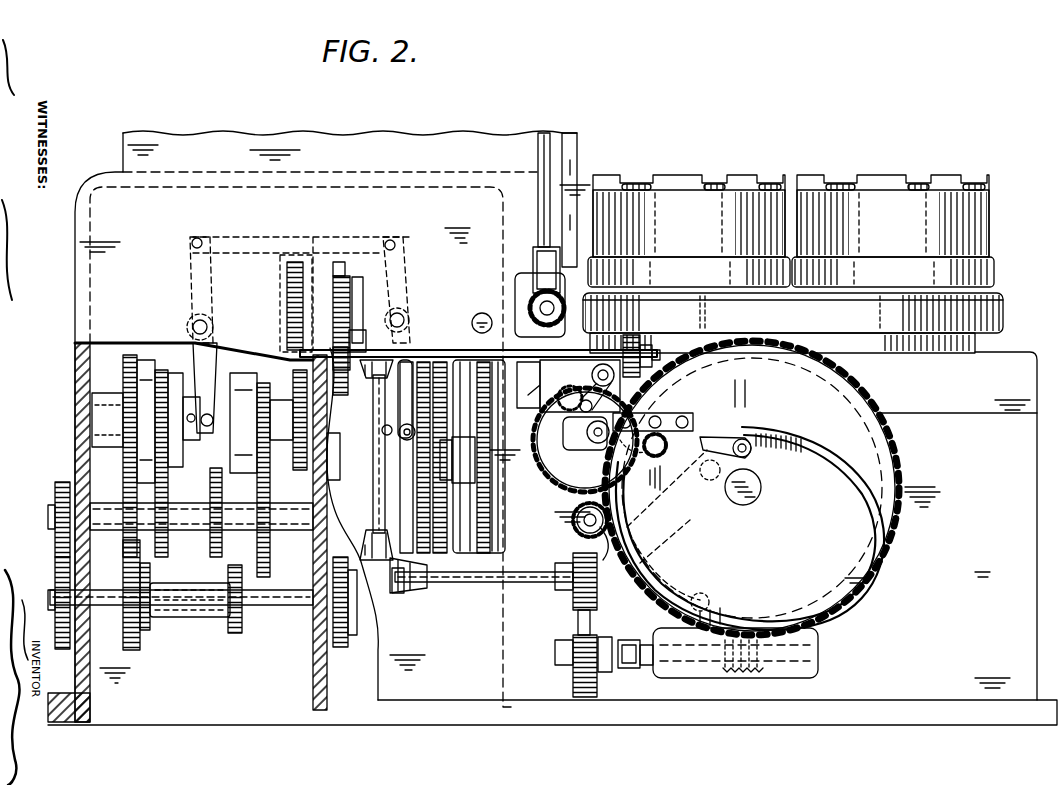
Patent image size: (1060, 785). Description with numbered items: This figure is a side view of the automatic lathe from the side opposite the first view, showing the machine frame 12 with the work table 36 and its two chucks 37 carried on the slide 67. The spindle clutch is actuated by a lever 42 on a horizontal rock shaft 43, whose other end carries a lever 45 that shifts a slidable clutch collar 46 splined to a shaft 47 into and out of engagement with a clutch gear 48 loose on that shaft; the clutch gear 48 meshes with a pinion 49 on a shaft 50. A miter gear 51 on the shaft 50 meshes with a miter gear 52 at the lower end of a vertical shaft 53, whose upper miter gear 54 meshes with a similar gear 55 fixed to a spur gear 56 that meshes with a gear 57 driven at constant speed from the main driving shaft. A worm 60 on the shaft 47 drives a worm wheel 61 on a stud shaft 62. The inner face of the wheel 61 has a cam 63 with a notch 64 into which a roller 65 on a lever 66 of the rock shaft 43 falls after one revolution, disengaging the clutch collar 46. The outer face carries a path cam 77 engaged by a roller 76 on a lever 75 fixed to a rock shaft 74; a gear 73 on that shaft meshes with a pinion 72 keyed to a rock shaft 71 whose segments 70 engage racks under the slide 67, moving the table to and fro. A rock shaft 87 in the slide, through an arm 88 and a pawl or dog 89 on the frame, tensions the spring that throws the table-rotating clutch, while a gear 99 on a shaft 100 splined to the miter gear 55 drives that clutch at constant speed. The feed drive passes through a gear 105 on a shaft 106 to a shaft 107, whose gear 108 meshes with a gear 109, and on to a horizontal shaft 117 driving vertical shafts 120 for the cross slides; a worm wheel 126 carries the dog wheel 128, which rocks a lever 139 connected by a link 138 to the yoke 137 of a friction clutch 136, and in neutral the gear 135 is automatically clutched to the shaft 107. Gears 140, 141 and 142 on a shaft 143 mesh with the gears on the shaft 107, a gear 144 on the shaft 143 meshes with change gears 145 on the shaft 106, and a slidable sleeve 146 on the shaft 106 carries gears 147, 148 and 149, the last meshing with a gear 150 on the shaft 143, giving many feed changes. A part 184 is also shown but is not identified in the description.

The machine frame 12 is at (75, 272).
The work table 36 is at (809, 323).
The chuck 37 is at (791, 231).
The lever 42 is at (720, 440).
The horizontal rock shaft 43 is at (584, 515).
The lever 45 is at (600, 540).
The slidable clutch collar 46 is at (627, 670).
The shaft 47 is at (612, 672).
The clutch gear 48 is at (575, 678).
The pinion 49 is at (578, 597).
The shaft 50 is at (470, 583).
The miter gear 51 is at (401, 594).
The miter gear 52 is at (393, 576).
The vertical shaft 53 is at (377, 503).
The miter gear 54 is at (415, 352).
The miter gear 55 is at (390, 355).
The spur gear 56 is at (353, 277).
The gear 57 is at (340, 275).
The worm 60 is at (746, 672).
The worm wheel 61 is at (853, 600).
The stud shaft 62 is at (743, 505).
The cam 63 is at (845, 413).
The notch 64 is at (718, 607).
The roller 65 is at (701, 595).
The lever 66 is at (667, 506).
The slide 67 is at (957, 393).
The segments 70 is at (720, 440).
The rock shaft 71 is at (585, 440).
The pinion 72 is at (682, 486).
The gear 73 is at (635, 392).
The rock shaft 74 is at (587, 432).
The lever 75 is at (752, 452).
The roller 76 is at (760, 431).
The path cam 77 is at (875, 548).
The rock shaft 87 is at (615, 385).
The arm 88 is at (580, 386).
The pawl or dog 89 is at (700, 390).
The gear 99 is at (650, 328).
The shaft 100 is at (497, 350).
The gear 105 is at (347, 648).
The shaft 106 is at (310, 620).
The shaft 107 is at (270, 475).
The gear 108 is at (385, 418).
The gear 109 is at (287, 274).
The horizontal shaft 117 is at (540, 300).
The vertical shafts 120 is at (547, 133).
The worm wheel 126 is at (500, 575).
The dog wheel 128 is at (440, 578).
The gear 135 is at (298, 370).
The friction clutch 136 is at (168, 372).
The yoke 137 is at (190, 288).
The link 138 is at (250, 232).
The lever 139 is at (405, 292).
The gear 140 is at (268, 570).
The gear 141 is at (165, 595).
The gear 142 is at (123, 480).
The shaft 143 is at (240, 520).
The gear 144 is at (50, 500).
The change gears 145 is at (58, 570).
The slidable sleeve 146 is at (190, 612).
The sleeve gear 147 is at (123, 640).
The sleeve gear 148 is at (147, 630).
The sleeve gear 149 is at (237, 565).
The gear 150 is at (200, 512).
The pawl 184 is at (530, 385).